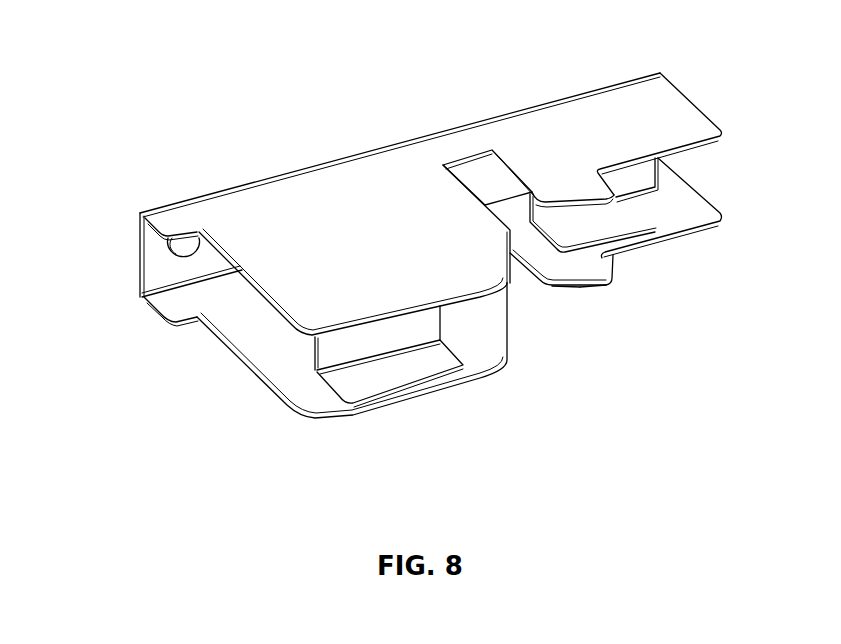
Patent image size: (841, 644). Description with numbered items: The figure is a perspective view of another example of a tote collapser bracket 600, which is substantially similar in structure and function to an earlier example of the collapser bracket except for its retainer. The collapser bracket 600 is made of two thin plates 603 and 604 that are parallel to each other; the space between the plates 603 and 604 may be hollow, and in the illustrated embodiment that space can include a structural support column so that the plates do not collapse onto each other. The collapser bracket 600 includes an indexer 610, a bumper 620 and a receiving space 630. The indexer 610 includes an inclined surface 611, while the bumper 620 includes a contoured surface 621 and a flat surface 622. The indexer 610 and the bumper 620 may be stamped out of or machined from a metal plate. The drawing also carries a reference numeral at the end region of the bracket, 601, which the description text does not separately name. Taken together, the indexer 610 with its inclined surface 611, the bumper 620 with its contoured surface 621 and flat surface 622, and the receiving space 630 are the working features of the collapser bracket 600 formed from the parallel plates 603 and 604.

The tote collapser bracket 600 is at (300, 124).
The end flange 601 is at (140, 248).
The thin plate 603 is at (678, 100).
The thin plate 604 is at (702, 203).
The indexer 610 is at (322, 432).
The inclined surface 611 is at (510, 353).
The bumper 620 is at (613, 298).
The contoured surface 621 is at (587, 292).
The flat surface 622 is at (613, 282).
The receiving space 630 is at (518, 292).